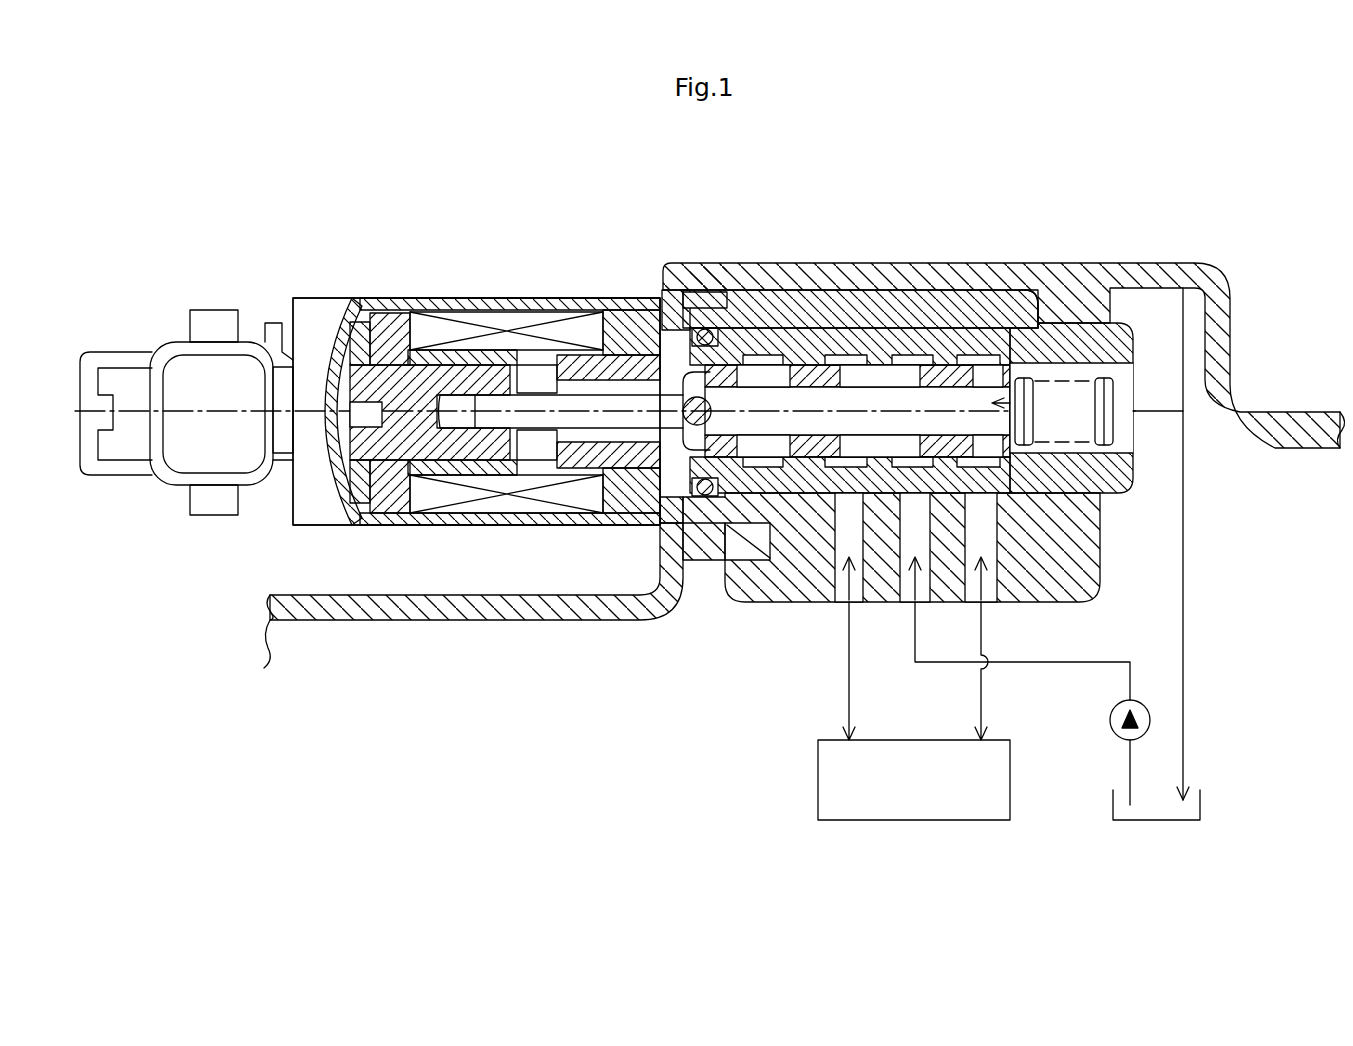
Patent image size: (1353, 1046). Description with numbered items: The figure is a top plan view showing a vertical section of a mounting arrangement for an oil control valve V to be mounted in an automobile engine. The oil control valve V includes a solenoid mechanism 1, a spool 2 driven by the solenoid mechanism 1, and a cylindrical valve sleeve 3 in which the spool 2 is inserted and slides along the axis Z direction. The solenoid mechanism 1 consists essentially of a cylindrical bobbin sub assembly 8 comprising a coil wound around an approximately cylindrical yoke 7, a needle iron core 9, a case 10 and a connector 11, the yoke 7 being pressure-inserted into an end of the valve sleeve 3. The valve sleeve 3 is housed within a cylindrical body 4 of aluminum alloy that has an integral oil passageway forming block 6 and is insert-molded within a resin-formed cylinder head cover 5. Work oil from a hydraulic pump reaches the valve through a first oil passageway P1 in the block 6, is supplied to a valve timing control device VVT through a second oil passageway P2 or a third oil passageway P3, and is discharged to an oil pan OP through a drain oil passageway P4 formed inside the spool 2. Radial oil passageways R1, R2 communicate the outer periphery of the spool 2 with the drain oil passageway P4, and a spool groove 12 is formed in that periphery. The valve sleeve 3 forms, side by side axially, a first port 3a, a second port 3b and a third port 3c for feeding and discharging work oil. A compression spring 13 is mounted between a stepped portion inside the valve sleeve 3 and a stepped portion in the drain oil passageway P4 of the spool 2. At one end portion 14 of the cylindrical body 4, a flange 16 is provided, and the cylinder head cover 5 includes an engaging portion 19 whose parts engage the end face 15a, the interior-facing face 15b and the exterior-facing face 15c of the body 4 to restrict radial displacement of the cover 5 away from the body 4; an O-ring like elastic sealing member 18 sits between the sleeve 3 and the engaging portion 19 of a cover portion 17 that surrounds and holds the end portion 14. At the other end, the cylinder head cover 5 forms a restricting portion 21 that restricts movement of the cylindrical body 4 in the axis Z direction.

The solenoid mechanism 1 is at (452, 296).
The spool 2 is at (950, 372).
The valve sleeve 3 is at (787, 370).
The first port 3a is at (908, 464).
The second port 3b is at (840, 462).
The third port 3c is at (968, 470).
The cylindrical body 4 is at (838, 338).
The cylinder head cover 5 is at (1088, 262).
The oil passageway forming block 6 is at (1050, 582).
The yoke 7 is at (584, 356).
The bobbin sub assembly 8 is at (446, 513).
The needle iron core 9 is at (483, 513).
The case 10 is at (392, 298).
The connector 11 is at (185, 482).
The spool groove 12 is at (880, 360).
The compression spring 13 is at (1105, 378).
The one end portion 14 is at (700, 290).
The end face 15a is at (680, 527).
The interior-facing face 15b is at (578, 519).
The exterior-facing face 15c is at (697, 532).
The flange 16 is at (683, 298).
The cover portion 17 is at (657, 525).
The elastic sealing member 18 is at (708, 330).
The engaging portion 19 is at (706, 290).
The restricting portion 21 is at (1028, 300).
The radial oil passageway R1 is at (990, 378).
The radial oil passageway R2 is at (765, 378).
The oil control valve V is at (522, 268).
The axis Z is at (591, 411).
The first oil passageway P1 is at (905, 600).
The second oil passageway P2 is at (840, 600).
The third oil passageway P3 is at (985, 600).
The drain oil passageway P4 is at (1133, 400).
The valve timing control device VVT is at (914, 780).
The oil pan OP is at (1202, 798).